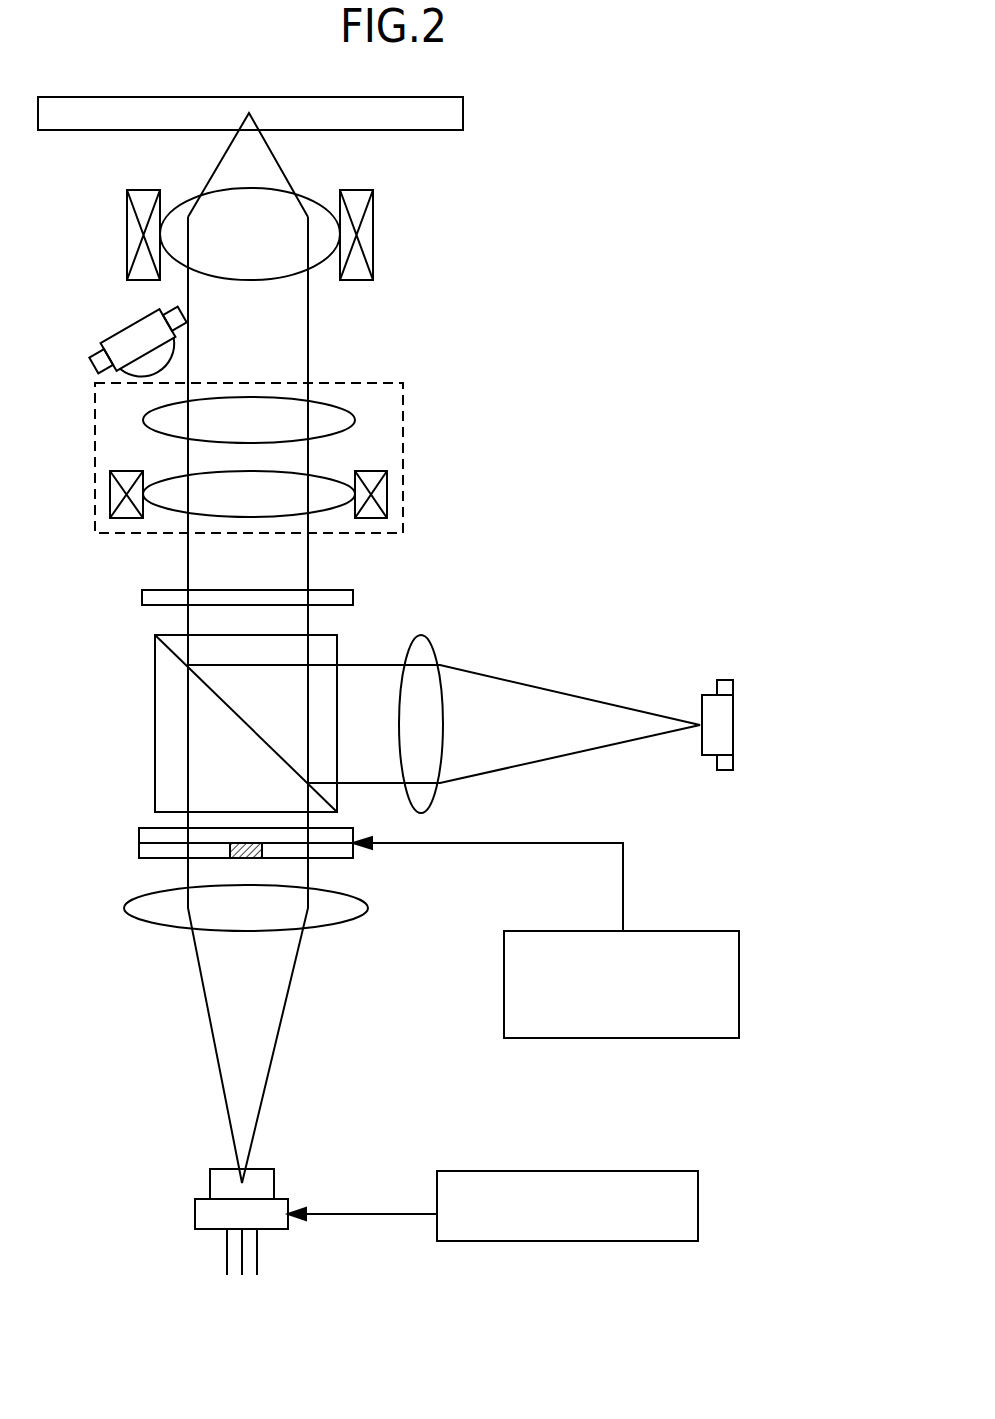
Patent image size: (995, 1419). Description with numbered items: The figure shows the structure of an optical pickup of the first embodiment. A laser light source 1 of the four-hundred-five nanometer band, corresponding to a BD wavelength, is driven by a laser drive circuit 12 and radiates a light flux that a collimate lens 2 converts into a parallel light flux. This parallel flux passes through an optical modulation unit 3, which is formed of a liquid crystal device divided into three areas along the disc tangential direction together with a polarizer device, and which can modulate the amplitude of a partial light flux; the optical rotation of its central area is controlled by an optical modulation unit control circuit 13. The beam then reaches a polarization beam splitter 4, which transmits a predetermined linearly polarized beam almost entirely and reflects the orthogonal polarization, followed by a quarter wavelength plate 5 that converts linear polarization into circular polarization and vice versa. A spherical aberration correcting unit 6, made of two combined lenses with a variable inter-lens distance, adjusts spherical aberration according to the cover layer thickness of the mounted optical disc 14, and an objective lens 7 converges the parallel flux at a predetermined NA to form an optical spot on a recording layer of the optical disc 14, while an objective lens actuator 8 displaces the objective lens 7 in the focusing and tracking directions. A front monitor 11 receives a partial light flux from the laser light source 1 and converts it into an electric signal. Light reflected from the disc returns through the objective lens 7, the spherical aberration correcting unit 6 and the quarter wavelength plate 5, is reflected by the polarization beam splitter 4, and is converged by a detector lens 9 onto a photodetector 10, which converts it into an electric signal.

The laser light source 1 is at (205, 1212).
The collimate lens 2 is at (132, 907).
The optical modulation unit 3 is at (146, 840).
The polarization beam splitter 4 is at (160, 722).
The quarter wavelength plate 5 is at (144, 595).
The spherical aberration correcting unit 6 is at (404, 432).
The objective lens 7 is at (186, 214).
The objective lens actuator 8 is at (367, 233).
The detector lens 9 is at (425, 651).
The photodetector 10 is at (735, 725).
The front monitor 11 is at (135, 335).
The laser drive circuit 12 is at (570, 1171).
The optical modulation unit control circuit 13 is at (677, 931).
The optical disc 14 is at (458, 113).